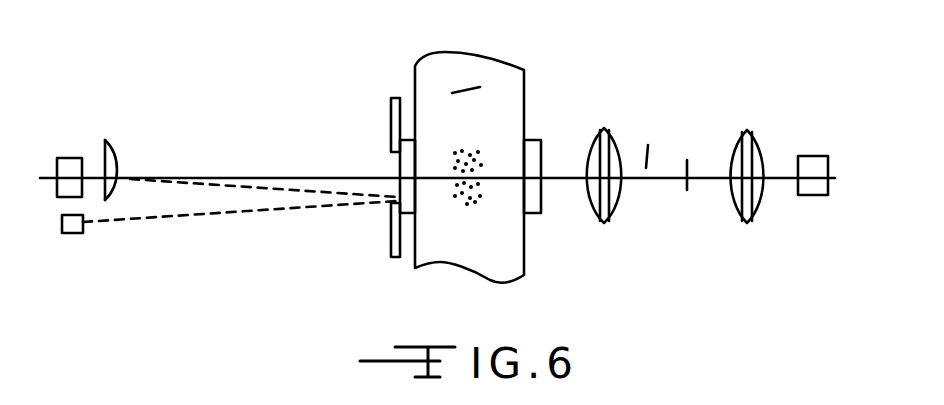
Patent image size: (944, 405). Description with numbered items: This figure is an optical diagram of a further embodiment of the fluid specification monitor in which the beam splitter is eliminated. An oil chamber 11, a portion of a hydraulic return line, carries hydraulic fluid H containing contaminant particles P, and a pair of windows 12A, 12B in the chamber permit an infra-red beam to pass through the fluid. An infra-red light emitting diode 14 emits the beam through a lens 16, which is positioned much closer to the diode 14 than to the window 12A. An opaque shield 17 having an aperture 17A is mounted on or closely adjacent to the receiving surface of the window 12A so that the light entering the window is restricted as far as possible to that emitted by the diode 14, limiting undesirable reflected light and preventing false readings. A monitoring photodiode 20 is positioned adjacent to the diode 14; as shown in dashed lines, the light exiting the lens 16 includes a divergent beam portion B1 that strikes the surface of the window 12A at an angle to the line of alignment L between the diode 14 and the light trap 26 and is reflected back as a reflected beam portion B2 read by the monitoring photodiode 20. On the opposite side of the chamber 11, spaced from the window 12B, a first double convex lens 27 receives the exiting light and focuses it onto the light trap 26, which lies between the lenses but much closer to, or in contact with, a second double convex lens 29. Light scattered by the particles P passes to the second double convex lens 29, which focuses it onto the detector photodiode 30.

The oil chamber 11 is at (430, 57).
The window 12A is at (406, 150).
The window 12B is at (531, 147).
The infra-red light emitting diode 14 is at (73, 157).
The lens 16 is at (105, 140).
The opaque shield 17 is at (390, 243).
The aperture 17A is at (393, 152).
The monitoring photodiode 20 is at (67, 234).
The light trap 26 is at (684, 196).
The first double convex lens 27 is at (606, 128).
The second double convex lens 29 is at (748, 130).
The detector photodiode 30 is at (806, 160).
The divergent beam portion B1 is at (218, 188).
The reflected beam portion B2 is at (277, 208).
The hydraulic fluid H is at (466, 79).
The line of alignment L is at (648, 140).
The particles P is at (462, 207).